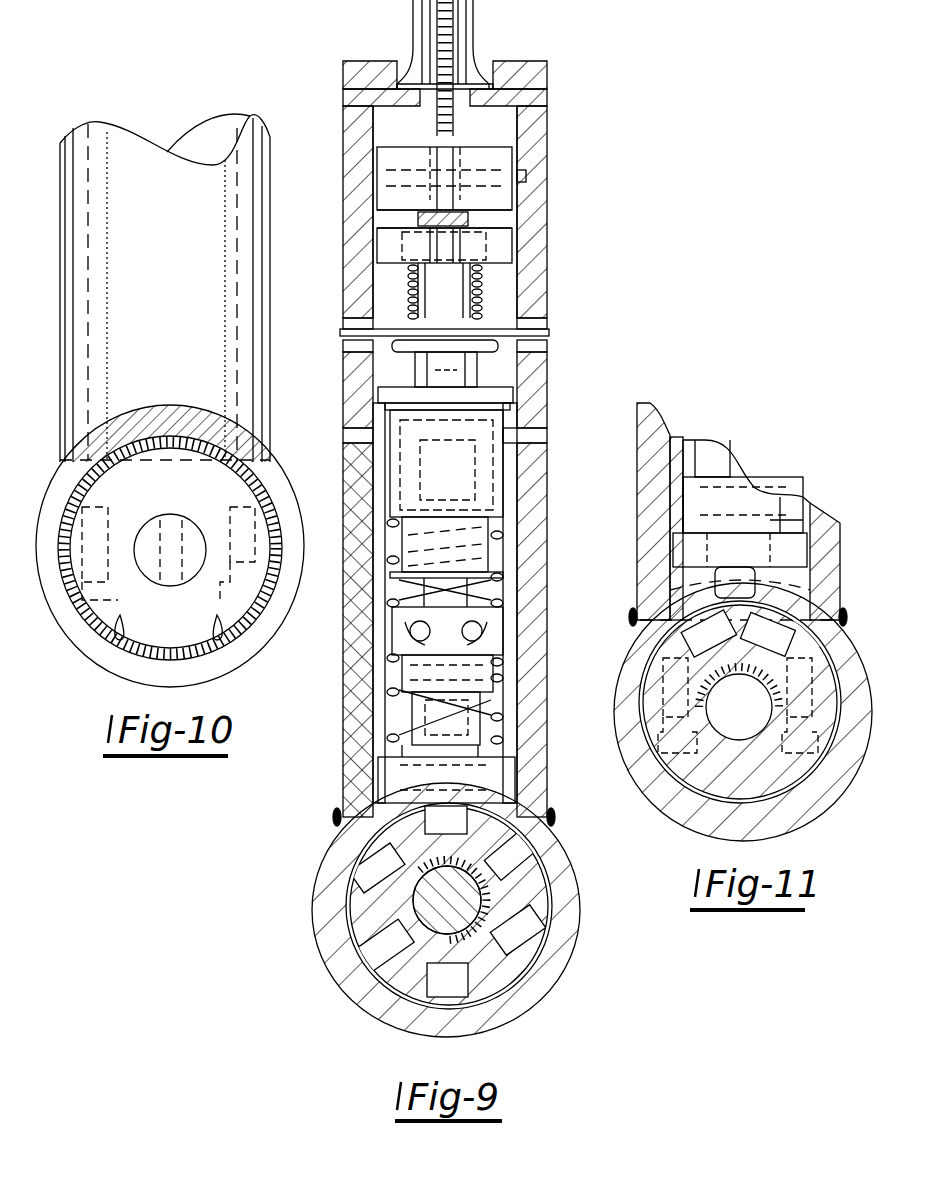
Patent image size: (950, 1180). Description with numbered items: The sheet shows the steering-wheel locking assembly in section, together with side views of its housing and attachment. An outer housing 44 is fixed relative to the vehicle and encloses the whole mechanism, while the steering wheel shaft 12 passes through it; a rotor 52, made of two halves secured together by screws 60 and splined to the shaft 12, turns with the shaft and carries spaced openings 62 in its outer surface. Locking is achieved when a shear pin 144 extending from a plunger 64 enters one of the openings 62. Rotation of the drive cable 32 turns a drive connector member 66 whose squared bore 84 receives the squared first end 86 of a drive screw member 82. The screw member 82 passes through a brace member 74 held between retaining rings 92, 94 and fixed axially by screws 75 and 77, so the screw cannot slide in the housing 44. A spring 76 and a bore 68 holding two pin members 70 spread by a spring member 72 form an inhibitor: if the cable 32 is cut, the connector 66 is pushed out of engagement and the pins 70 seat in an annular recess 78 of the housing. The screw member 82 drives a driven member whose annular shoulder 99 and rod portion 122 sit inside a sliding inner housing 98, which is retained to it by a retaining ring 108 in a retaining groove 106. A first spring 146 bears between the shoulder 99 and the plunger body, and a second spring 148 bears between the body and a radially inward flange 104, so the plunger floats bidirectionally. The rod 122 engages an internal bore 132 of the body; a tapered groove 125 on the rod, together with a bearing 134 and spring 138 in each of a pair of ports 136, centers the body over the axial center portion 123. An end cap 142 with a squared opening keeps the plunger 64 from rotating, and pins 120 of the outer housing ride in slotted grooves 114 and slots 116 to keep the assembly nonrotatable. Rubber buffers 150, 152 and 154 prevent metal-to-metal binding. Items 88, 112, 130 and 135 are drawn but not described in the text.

In FIG. 9, the steering wheel shaft 12 is at (470, 900).
In FIG. 10, the steering wheel shaft 12 is at (160, 551).
In FIG. 11, the steering wheel shaft 12 is at (738, 720).
In FIG. 9, the drive cable 32 is at (455, 44).
In FIG. 9, the outer housing 44 is at (642, 565).
In FIG. 10, the outer housing 44 is at (128, 127).
In FIG. 11, the outer housing 44 is at (642, 565).
In FIG. 9, the rotor 52 is at (540, 898).
In FIG. 11, the rotor 52 is at (765, 770).
In FIG. 10, the screws 60 is at (105, 653).
In FIG. 9, the openings 62 is at (430, 823).
In FIG. 9, the plunger 64 is at (482, 692).
In FIG. 9, the drive connector member 66 is at (500, 158).
In FIG. 9, the bore 68 is at (495, 211).
In FIG. 9, the pin members 70 is at (492, 219).
In FIG. 9, the spring member 72 is at (425, 216).
In FIG. 9, the brace member 74 is at (500, 333).
In FIG. 9, the screw 75 is at (366, 324).
In FIG. 9, the spring 76 is at (482, 290).
In FIG. 9, the screw 77 is at (396, 347).
In FIG. 9, the annular recess 78 is at (527, 176).
In FIG. 9, the drive screw member 82 is at (470, 370).
In FIG. 9, the bore 84 is at (493, 246).
In FIG. 9, the first end 86 is at (455, 257).
In FIG. 9, the piston face 88 is at (400, 397).
In FIG. 9, the retaining ring 92 is at (408, 292).
In FIG. 9, the retaining ring 94 is at (366, 332).
In FIG. 9, the inner housing 98 is at (500, 560).
In FIG. 11, the inner housing 98 is at (790, 522).
In FIG. 9, the annular shoulder 99 is at (392, 528).
In FIG. 9, the radially inwardly extending flange 104 is at (508, 748).
In FIG. 9, the retaining groove 106 is at (507, 395).
In FIG. 9, the retaining ring 108 is at (392, 431).
In FIG. 9, the cylinder wall 112 is at (388, 492).
In FIG. 9, the slotted grooves 114 is at (505, 462).
In FIG. 9, the slots 116 is at (497, 490).
In FIG. 9, the pins 120 is at (524, 436).
In FIG. 9, the rod portion 122 is at (395, 736).
In FIG. 9, the axial center portion 123 is at (390, 660).
In FIG. 9, the groove 125 is at (503, 608).
In FIG. 9, the spring 130 is at (500, 720).
In FIG. 9, the internal bore 132 is at (495, 663).
In FIG. 9, the bearing 134 is at (500, 612).
In FIG. 9, the spring coil 135 is at (388, 577).
In FIG. 9, the ports 136 is at (395, 690).
In FIG. 9, the spring 138 is at (480, 630).
In FIG. 9, the end cap 142 is at (500, 788).
In FIG. 11, the end cap 142 is at (790, 555).
In FIG. 9, the shear pin 144 is at (553, 818).
In FIG. 9, the first spring 146 is at (395, 604).
In FIG. 9, the second spring 148 is at (380, 785).
In FIG. 9, the first buffer 150 is at (420, 378).
In FIG. 9, the second buffer 152 is at (393, 640).
In FIG. 9, the third buffer 154 is at (388, 456).